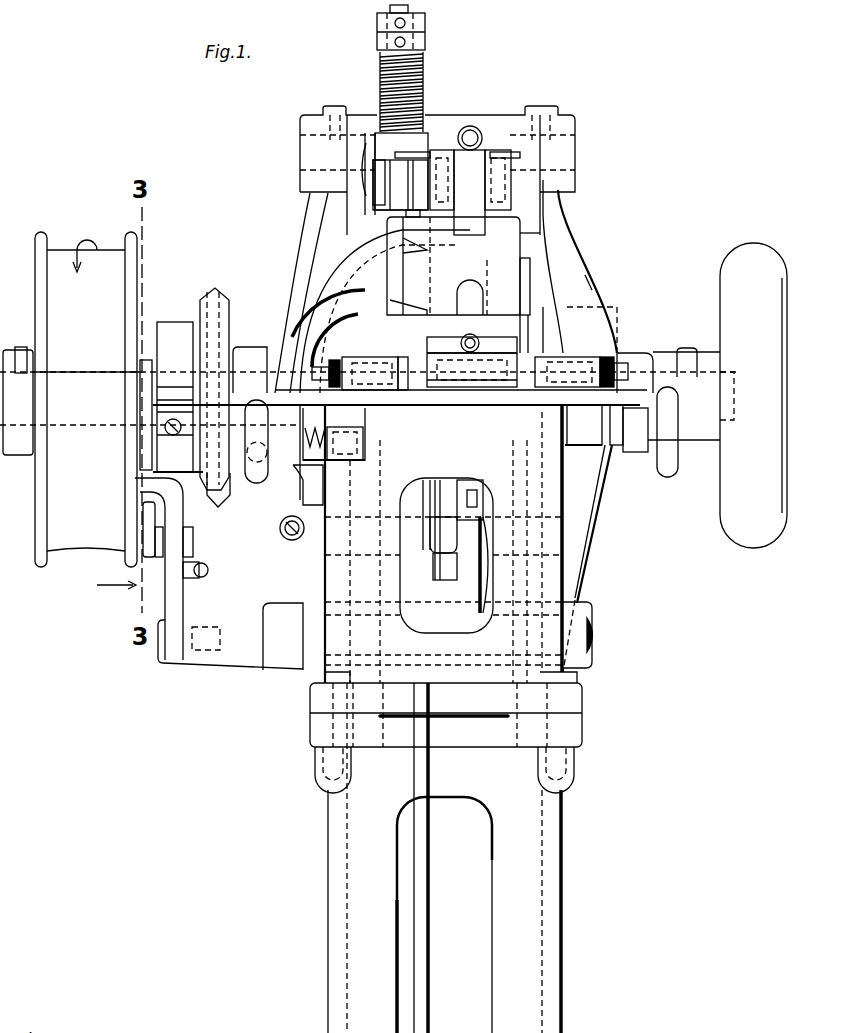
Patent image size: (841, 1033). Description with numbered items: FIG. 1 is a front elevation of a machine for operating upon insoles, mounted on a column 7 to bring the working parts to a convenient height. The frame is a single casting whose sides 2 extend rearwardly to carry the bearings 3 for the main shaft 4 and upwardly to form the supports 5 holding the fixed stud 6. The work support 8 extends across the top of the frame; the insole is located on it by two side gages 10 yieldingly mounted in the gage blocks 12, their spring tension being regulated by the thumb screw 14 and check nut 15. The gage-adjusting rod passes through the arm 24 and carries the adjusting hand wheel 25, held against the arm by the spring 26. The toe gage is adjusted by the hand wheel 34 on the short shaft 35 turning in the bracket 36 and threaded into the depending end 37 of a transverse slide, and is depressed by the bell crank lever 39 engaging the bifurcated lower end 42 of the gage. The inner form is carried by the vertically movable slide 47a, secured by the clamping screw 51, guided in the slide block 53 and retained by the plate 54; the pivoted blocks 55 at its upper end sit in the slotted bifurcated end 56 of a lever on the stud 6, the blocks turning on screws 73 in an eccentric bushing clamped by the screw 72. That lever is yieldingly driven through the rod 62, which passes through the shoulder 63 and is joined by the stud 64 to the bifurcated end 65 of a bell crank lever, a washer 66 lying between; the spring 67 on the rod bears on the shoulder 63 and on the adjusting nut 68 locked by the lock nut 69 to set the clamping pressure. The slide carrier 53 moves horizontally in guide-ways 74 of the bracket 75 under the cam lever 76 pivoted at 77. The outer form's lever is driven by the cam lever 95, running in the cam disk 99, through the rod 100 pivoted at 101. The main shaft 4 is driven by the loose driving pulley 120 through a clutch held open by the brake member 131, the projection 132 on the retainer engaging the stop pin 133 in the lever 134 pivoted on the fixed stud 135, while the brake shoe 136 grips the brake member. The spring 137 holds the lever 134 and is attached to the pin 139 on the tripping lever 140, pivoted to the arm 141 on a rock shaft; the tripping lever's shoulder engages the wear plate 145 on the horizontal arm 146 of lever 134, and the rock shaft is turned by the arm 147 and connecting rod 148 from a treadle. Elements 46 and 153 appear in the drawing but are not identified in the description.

The sides 2 is at (568, 556).
The bearings 3 is at (252, 353).
The main shaft 4 is at (734, 372).
The supports 5 is at (290, 290).
The stud 6 is at (575, 140).
The column 7 is at (562, 873).
The work support 8 is at (475, 397).
The side gages 10 is at (372, 362).
The gage blocks 12 is at (577, 370).
The thumb screw 14 is at (340, 364).
The check nut 15 is at (690, 342).
The arm 24 is at (323, 480).
The adjusting hand wheel 25 is at (252, 478).
The spring 26 is at (327, 440).
The hand wheel 34 is at (670, 477).
The short shaft 35 is at (602, 470).
The arm 36 is at (635, 452).
The depending end 37 is at (586, 446).
The bell crank lever 39 is at (478, 500).
The bifurcated lower end 42 is at (484, 490).
The plate 46 is at (457, 383).
The vertically movable slide 47a is at (480, 358).
The clamping screw 51 is at (470, 336).
The slide block 53 is at (525, 233).
The plate 54 is at (530, 285).
The pivoted blocks 55 is at (442, 155).
The slotted bifurcated end 56 is at (482, 148).
The rod 62 is at (378, 22).
The shoulder 63 is at (380, 140).
The stud 64 is at (372, 195).
The bifurcated end 65 is at (373, 183).
The washer 66 is at (362, 165).
The spring 67 is at (424, 68).
The adjusting nut 68 is at (426, 42).
The lock nut 69 is at (426, 22).
The clamping screw 72 is at (472, 128).
The screw 73 is at (395, 155).
The guide-ways 74 is at (428, 238).
The bracket 75 is at (322, 278).
The cam lever 76 is at (416, 496).
The pivot 77 is at (398, 515).
The cam lever 95 is at (465, 568).
The cam disk 99 is at (590, 275).
The rod 100 is at (452, 535).
The pivot 101 is at (450, 578).
The driving pulley 120 is at (100, 300).
The brake member 131 is at (216, 290).
The projection 132 is at (165, 388).
The stop pin 133 is at (160, 405).
The lever 134 is at (160, 480).
The fixed stud 135 is at (145, 530).
The brake shoe 136 is at (251, 428).
The spring 137 is at (208, 570).
The pin 139 is at (186, 568).
The tripping lever 140 is at (183, 602).
The arm 141 is at (226, 650).
The wear plate 145 is at (157, 540).
The horizontal arm 146 is at (190, 550).
The arm 147 is at (395, 625).
The connecting rod 148 is at (426, 820).
The flange 153 is at (140, 368).